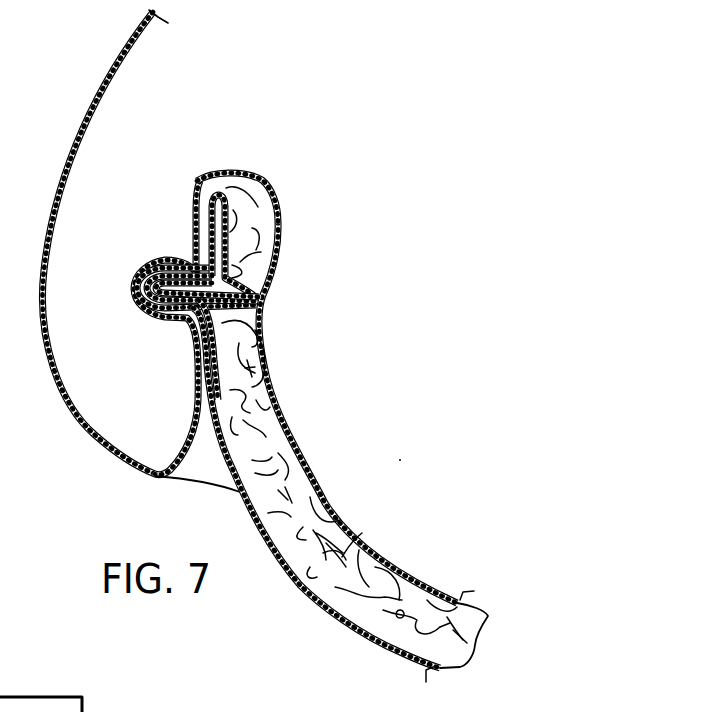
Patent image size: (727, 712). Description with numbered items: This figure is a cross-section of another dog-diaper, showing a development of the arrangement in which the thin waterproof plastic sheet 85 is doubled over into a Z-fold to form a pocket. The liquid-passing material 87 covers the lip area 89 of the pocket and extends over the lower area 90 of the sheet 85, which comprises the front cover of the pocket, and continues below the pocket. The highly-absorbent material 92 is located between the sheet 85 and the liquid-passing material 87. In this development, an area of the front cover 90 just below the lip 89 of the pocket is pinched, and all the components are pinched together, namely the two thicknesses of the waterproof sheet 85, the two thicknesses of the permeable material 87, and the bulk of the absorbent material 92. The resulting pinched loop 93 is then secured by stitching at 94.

The thin waterproof plastic sheet 85 is at (120, 68).
The liquid-passing material 87 is at (280, 206).
The lip area of the pocket 89 is at (236, 174).
The lower area of the sheet 90 is at (388, 647).
The highly-absorbent material 92 is at (150, 318).
The pinched loop 93 is at (121, 286).
The stitching 94 is at (195, 378).